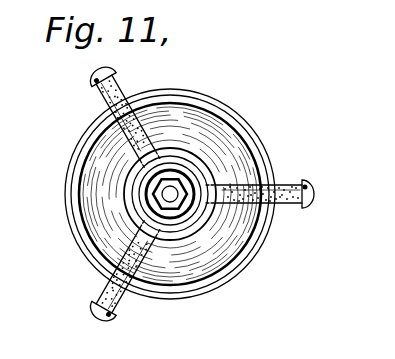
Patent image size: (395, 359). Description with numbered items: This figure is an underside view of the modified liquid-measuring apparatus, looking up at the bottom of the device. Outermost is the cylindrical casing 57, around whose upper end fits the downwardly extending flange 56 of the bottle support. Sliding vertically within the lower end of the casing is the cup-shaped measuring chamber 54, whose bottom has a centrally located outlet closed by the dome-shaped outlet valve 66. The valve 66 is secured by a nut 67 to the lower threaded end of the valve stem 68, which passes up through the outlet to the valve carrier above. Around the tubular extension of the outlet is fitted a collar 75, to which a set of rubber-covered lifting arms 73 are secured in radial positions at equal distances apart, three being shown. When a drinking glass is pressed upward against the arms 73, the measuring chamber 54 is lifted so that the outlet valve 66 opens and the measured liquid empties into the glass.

The measuring chamber 54 is at (100, 212).
The downwardly extending flange 56 is at (87, 128).
The cylindrical casing 57 is at (80, 178).
The outlet valve 66 is at (186, 150).
The nut 67 is at (171, 194).
The valve stem 68 is at (175, 185).
The lifting arms 73 is at (113, 71).
The collar 75 is at (208, 176).